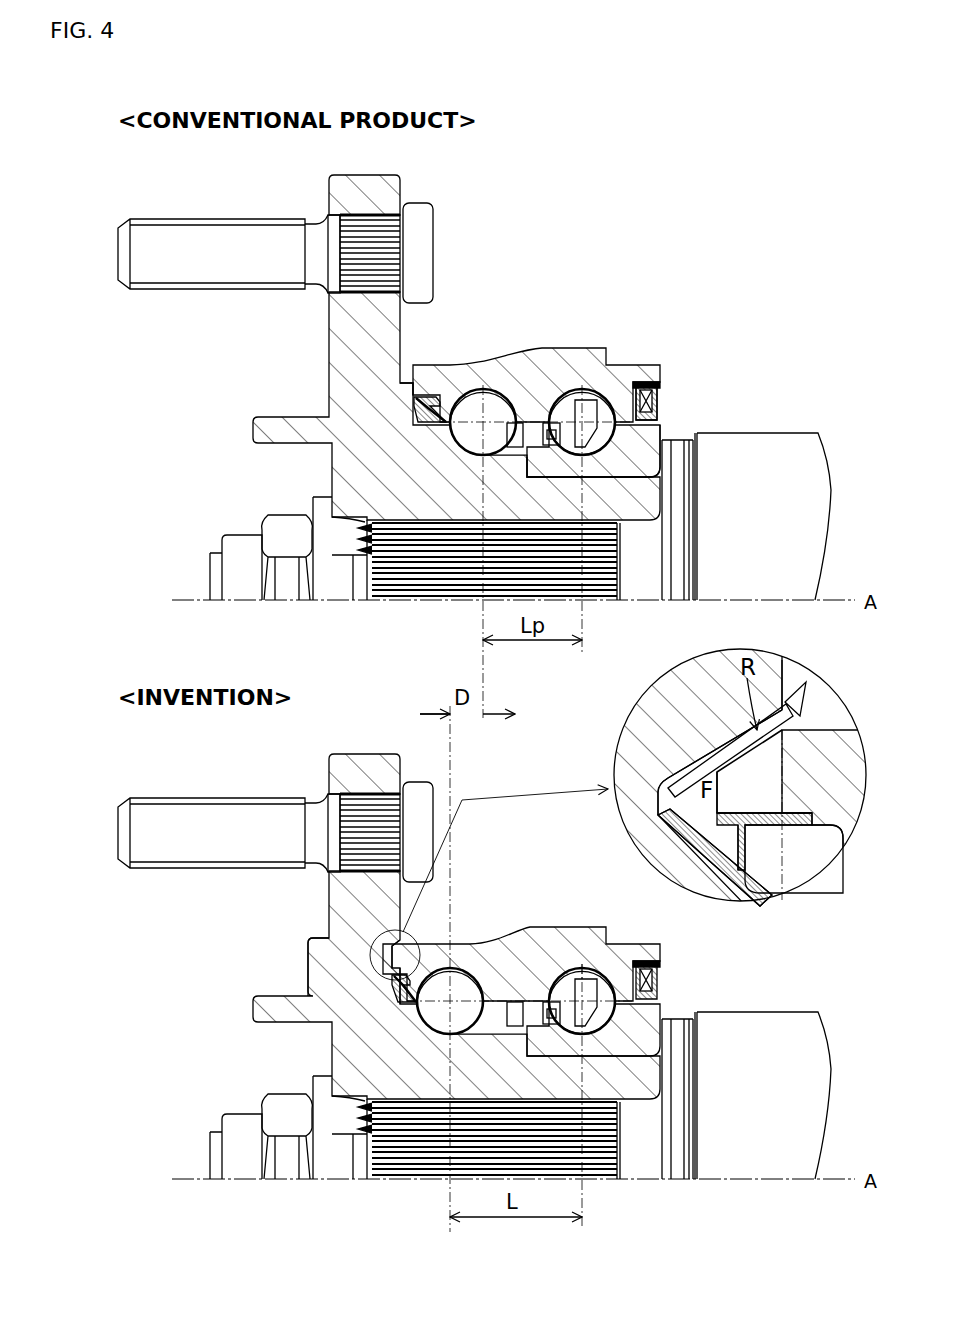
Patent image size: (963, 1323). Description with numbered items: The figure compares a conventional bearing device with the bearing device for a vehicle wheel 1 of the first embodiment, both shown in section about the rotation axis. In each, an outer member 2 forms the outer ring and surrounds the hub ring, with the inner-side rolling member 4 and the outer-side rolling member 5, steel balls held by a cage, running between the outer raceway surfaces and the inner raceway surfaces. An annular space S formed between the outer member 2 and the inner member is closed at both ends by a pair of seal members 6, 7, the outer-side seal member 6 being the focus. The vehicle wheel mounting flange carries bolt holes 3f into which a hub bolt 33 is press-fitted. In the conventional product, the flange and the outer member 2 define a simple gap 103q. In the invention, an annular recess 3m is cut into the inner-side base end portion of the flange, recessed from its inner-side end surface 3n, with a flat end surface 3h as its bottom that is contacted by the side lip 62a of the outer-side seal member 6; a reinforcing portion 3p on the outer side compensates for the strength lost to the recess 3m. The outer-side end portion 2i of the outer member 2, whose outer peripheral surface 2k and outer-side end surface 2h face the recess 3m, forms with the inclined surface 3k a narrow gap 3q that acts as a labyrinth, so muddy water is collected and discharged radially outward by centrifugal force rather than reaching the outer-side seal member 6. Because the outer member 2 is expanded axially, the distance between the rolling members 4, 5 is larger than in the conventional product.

The bearing device for a vehicle wheel 1 is at (95, 706).
The outer member 2 is at (571, 342).
The outer-side end surface of the outer member 2h is at (720, 808).
The outer-side end portion of the outer member 2i is at (752, 801).
The outer peripheral surface of the outer-side end portion 2k is at (778, 822).
The rolling member 4 is at (592, 442).
The rolling member 5 is at (472, 443).
The outer-side seal member 6 is at (413, 380).
The seal member 7 is at (668, 384).
The bolt hole 3f is at (323, 218).
The reinforcing portion 3p is at (310, 938).
The gap 3q is at (391, 962).
The annular recess 3m is at (395, 998).
The inner-side end surface of the vehicle wheel mounting flange 3n is at (787, 670).
The inclined surface 3k is at (737, 740).
The flat end surface 3h is at (658, 800).
The hub bolt 33 is at (188, 217).
The side lip 62a is at (664, 877).
The gap 103q is at (418, 367).
The annular space S is at (533, 432).